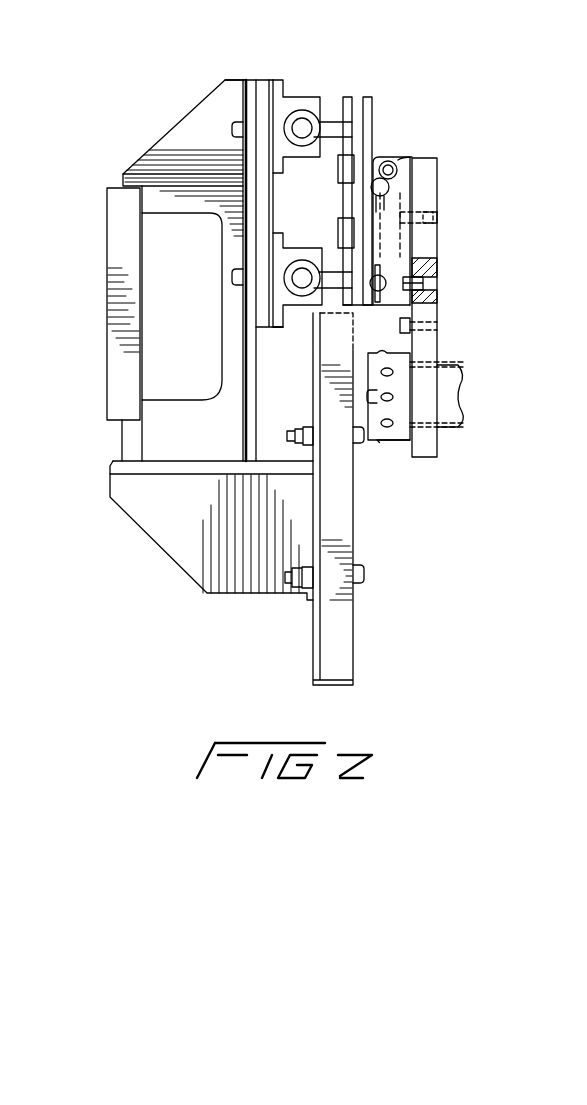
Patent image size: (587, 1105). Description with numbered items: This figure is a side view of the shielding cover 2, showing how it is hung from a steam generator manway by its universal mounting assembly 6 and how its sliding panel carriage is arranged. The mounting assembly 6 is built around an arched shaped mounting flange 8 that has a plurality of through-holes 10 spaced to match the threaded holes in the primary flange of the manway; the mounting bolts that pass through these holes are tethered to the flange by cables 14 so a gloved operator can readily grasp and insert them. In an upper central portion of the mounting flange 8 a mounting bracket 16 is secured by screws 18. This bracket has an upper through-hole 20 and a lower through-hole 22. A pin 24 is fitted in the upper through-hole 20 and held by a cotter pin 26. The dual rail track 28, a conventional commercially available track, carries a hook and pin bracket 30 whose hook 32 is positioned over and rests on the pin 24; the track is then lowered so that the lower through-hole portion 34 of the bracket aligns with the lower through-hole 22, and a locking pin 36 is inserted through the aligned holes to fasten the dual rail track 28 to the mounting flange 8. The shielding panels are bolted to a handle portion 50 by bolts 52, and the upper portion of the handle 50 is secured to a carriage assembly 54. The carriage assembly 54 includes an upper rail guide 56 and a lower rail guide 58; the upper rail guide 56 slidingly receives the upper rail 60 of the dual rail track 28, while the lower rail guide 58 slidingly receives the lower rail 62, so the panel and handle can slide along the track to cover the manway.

The shielding cover 2 is at (95, 462).
The universal mounting assembly 6 is at (466, 246).
The mounting flange 8 is at (438, 158).
The through-holes 10 is at (458, 365).
The cables 14 is at (388, 352).
The mounting bracket 16 is at (415, 158).
The screws 18 is at (437, 215).
The upper through-hole 20 is at (370, 182).
The lower through-hole 22 is at (372, 275).
The pin 24 is at (373, 157).
The cotter pin 26 is at (392, 164).
The dual rail track 28 is at (350, 97).
The hook and pin bracket 30 is at (372, 100).
The hook 32 is at (338, 163).
The lower through-hole portion 34 is at (436, 258).
The locking pin 36 is at (438, 312).
The handle portion 50 is at (107, 262).
The bolts 52 is at (362, 443).
The carriage assembly 54 is at (257, 78).
The upper rail guide 56 is at (283, 78).
The lower rail guide 58 is at (282, 327).
The upper rail 60 is at (302, 110).
The lower rail 62 is at (300, 296).